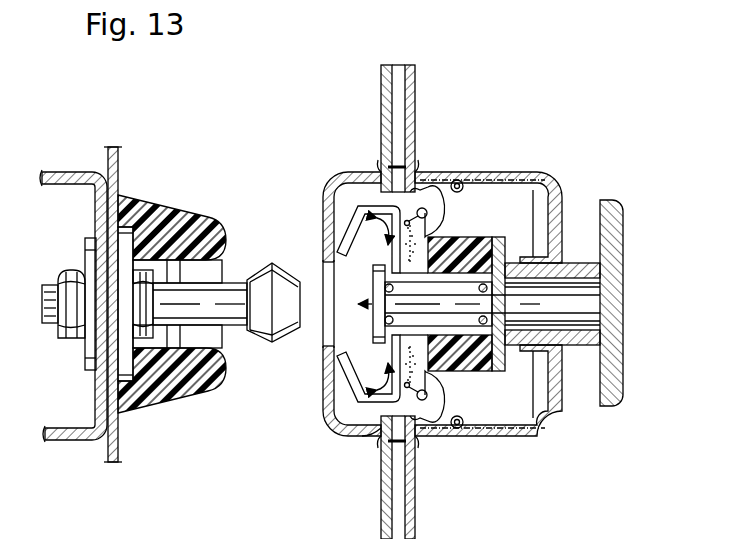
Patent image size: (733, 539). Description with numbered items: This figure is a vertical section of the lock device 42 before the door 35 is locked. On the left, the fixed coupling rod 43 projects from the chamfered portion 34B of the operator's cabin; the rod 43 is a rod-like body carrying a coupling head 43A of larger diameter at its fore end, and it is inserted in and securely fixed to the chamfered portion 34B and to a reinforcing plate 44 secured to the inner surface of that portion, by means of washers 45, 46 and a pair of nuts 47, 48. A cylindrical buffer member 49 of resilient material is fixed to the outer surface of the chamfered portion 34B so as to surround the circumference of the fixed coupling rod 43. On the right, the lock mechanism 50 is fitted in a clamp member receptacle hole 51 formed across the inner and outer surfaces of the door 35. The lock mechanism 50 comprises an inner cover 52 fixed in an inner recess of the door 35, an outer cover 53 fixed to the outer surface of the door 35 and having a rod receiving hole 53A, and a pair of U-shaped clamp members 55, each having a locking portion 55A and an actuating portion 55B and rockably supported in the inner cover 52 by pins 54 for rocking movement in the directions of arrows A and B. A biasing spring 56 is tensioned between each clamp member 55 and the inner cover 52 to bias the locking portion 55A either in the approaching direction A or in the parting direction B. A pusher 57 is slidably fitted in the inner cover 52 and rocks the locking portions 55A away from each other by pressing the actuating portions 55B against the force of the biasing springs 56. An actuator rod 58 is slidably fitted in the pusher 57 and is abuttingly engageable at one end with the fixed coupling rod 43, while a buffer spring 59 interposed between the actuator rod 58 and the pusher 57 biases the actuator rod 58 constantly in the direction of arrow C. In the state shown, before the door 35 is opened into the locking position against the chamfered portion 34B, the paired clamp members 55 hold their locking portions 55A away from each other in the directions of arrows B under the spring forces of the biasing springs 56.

The chamfered portion 34B is at (113, 166).
The door 35 is at (418, 532).
The lock device 42 is at (627, 163).
The fixed coupling rod 43 is at (233, 272).
The coupling head 43A is at (280, 342).
The reinforcing plate 44 is at (50, 172).
The washer 45 is at (123, 388).
The washer 46 is at (88, 243).
The nut 47 is at (143, 272).
The nut 48 is at (65, 343).
The cylindrical buffer member 49 is at (172, 380).
The lock mechanism 50 is at (443, 302).
The clamp member receptacle hole 51 is at (380, 437).
The inner cover 52 is at (540, 172).
The outer cover 53 is at (318, 286).
The rod receiving hole 53A is at (328, 260).
The pin 54 is at (412, 233).
The clamp member 55 is at (327, 285).
The locking portion 55A is at (352, 216).
The actuating portion 55B is at (478, 237).
The biasing spring 56 is at (439, 192).
The pusher 57 is at (617, 212).
The actuator rod 58 is at (455, 250).
The buffer spring 59 is at (517, 350).